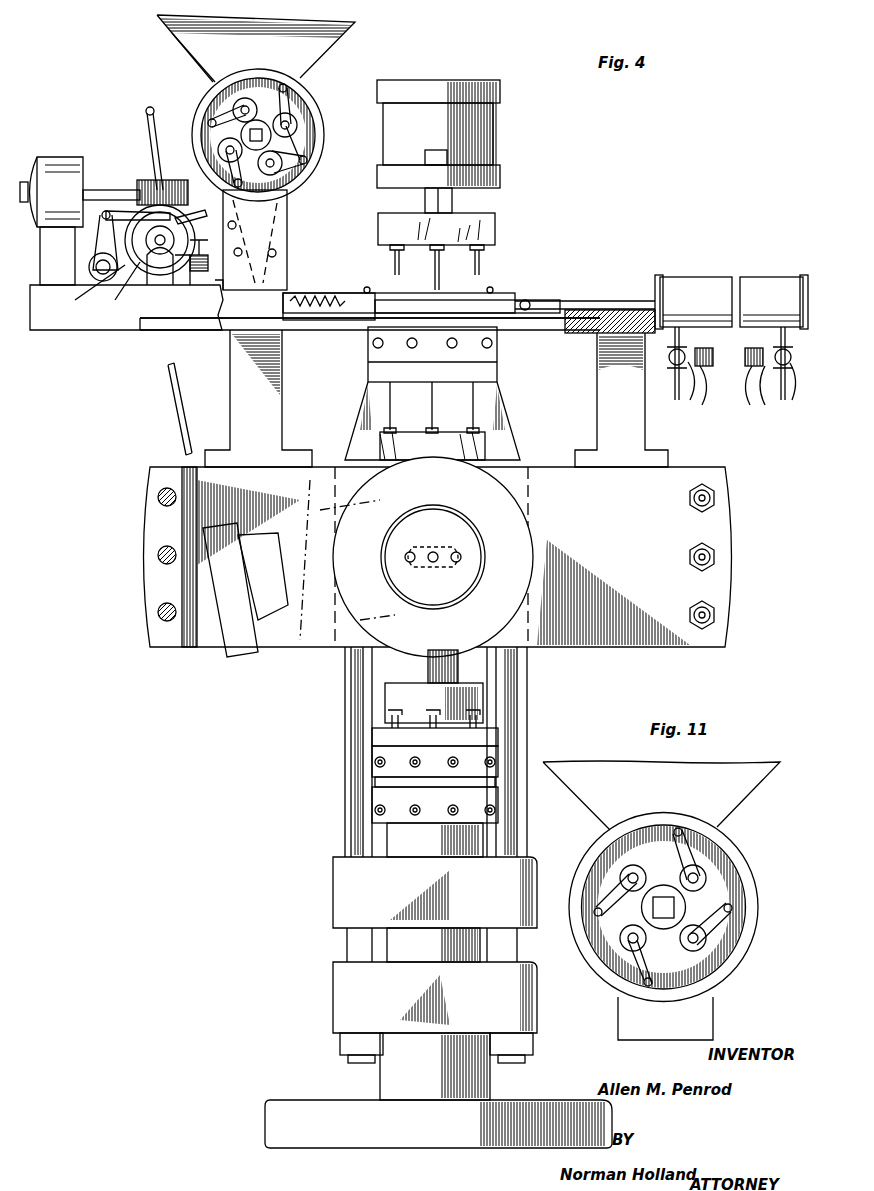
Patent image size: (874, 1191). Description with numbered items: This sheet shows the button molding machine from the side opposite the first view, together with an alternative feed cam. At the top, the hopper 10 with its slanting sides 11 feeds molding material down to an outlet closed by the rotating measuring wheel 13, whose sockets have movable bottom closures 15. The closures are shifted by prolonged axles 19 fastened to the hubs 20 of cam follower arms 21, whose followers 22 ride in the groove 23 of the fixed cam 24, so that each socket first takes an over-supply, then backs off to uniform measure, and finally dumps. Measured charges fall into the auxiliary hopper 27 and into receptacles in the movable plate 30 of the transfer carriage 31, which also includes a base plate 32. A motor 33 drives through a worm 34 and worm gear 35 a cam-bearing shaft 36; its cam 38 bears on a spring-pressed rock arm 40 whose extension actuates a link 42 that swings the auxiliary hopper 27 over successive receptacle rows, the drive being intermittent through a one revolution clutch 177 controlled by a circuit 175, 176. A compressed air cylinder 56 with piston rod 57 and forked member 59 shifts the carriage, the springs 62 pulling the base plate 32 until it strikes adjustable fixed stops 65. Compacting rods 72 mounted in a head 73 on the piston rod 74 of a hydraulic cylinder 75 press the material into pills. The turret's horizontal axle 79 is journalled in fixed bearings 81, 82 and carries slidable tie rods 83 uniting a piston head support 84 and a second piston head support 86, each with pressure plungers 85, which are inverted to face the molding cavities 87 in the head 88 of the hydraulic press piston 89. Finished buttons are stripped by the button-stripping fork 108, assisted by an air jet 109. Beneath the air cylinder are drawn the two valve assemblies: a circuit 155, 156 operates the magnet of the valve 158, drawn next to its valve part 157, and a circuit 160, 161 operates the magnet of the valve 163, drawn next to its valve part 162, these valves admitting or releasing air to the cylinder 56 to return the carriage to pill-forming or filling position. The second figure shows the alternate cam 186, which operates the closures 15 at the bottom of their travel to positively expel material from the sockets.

In FIG. 4, the hopper 10 is at (356, 27).
In FIG. 11, the hopper 10 is at (775, 770).
In FIG. 4, the slanting sides 11 is at (180, 40).
In FIG. 4, the measuring wheel 13 is at (300, 120).
In FIG. 11, the measuring wheel 13 is at (710, 895).
In FIG. 4, the movable bottom closures 15 is at (272, 138).
In FIG. 11, the movable bottom closures 15 is at (650, 905).
In FIG. 4, the prolonged axles 19 is at (258, 80).
In FIG. 11, the prolonged axles 19 is at (700, 945).
In FIG. 4, the hubs 20 is at (284, 155).
In FIG. 11, the hubs 20 is at (698, 950).
In FIG. 4, the cam follower arms 21 is at (225, 112).
In FIG. 4, the followers 22 is at (296, 84).
In FIG. 11, the followers 22 is at (680, 826).
In FIG. 4, the groove 23 is at (302, 102).
In FIG. 4, the fixed cam 24 is at (318, 168).
In FIG. 11, the fixed cam 24 is at (752, 902).
In FIG. 4, the auxiliary hopper 27 is at (270, 230).
In FIG. 4, the movable plate 30 is at (378, 290).
In FIG. 4, the transfer carriage 31 is at (165, 180).
In FIG. 4, the base plate 32 is at (325, 330).
In FIG. 4, the motor 33 is at (51, 192).
In FIG. 4, the worm 34 is at (180, 190).
In FIG. 4, the worm gear 35 is at (119, 291).
In FIG. 4, the cam-bearing shaft 36 is at (160, 255).
In FIG. 4, the cam 38 is at (185, 215).
In FIG. 4, the rock arm 40 is at (98, 235).
In FIG. 4, the link 42 is at (205, 224).
In FIG. 4, the compressed air cylinder 56 is at (731, 302).
In FIG. 4, the piston rod 57 is at (584, 298).
In FIG. 4, the forked member 59 is at (528, 295).
In FIG. 4, the springs 62 is at (310, 293).
In FIG. 4, the adjustable fixed stops 65 is at (548, 328).
In FIG. 4, the compacting rods 72 is at (484, 262).
In FIG. 4, the head 73 is at (498, 217).
In FIG. 4, the piston rod 74 is at (452, 204).
In FIG. 4, the cylinder 75 is at (438, 134).
In FIG. 4, the horizontal axle 79 is at (440, 520).
In FIG. 4, the fixed bearing 81 is at (672, 646).
In FIG. 4, the fixed bearing 82 is at (286, 647).
In FIG. 4, the tie rods 83 is at (410, 666).
In FIG. 4, the piston head support 84 is at (480, 440).
In FIG. 4, the pressure plungers 85 is at (478, 402).
In FIG. 4, the second piston head support 86 is at (395, 700).
In FIG. 4, the molding cavities 87 is at (500, 778).
In FIG. 4, the head 88 is at (500, 802).
In FIG. 4, the hydraulic press piston 89 is at (483, 840).
In FIG. 4, the button-stripping fork 108 is at (197, 512).
In FIG. 4, the air jet 109 is at (185, 402).
In FIG. 4, the circuit 155 is at (690, 400).
In FIG. 4, the circuit 156 is at (702, 405).
In FIG. 4, the valve 157 is at (712, 350).
In FIG. 4, the valve 158 is at (672, 370).
In FIG. 4, the circuit 160 is at (750, 405).
In FIG. 4, the circuit 161 is at (765, 405).
In FIG. 4, the valve 162 is at (758, 344).
In FIG. 4, the valve 163 is at (792, 400).
In FIG. 4, the circuit 175 is at (185, 270).
In FIG. 4, the circuit 176 is at (200, 275).
In FIG. 4, the one revolution clutch 177 is at (86, 292).
In FIG. 11, the cam 186 is at (742, 938).